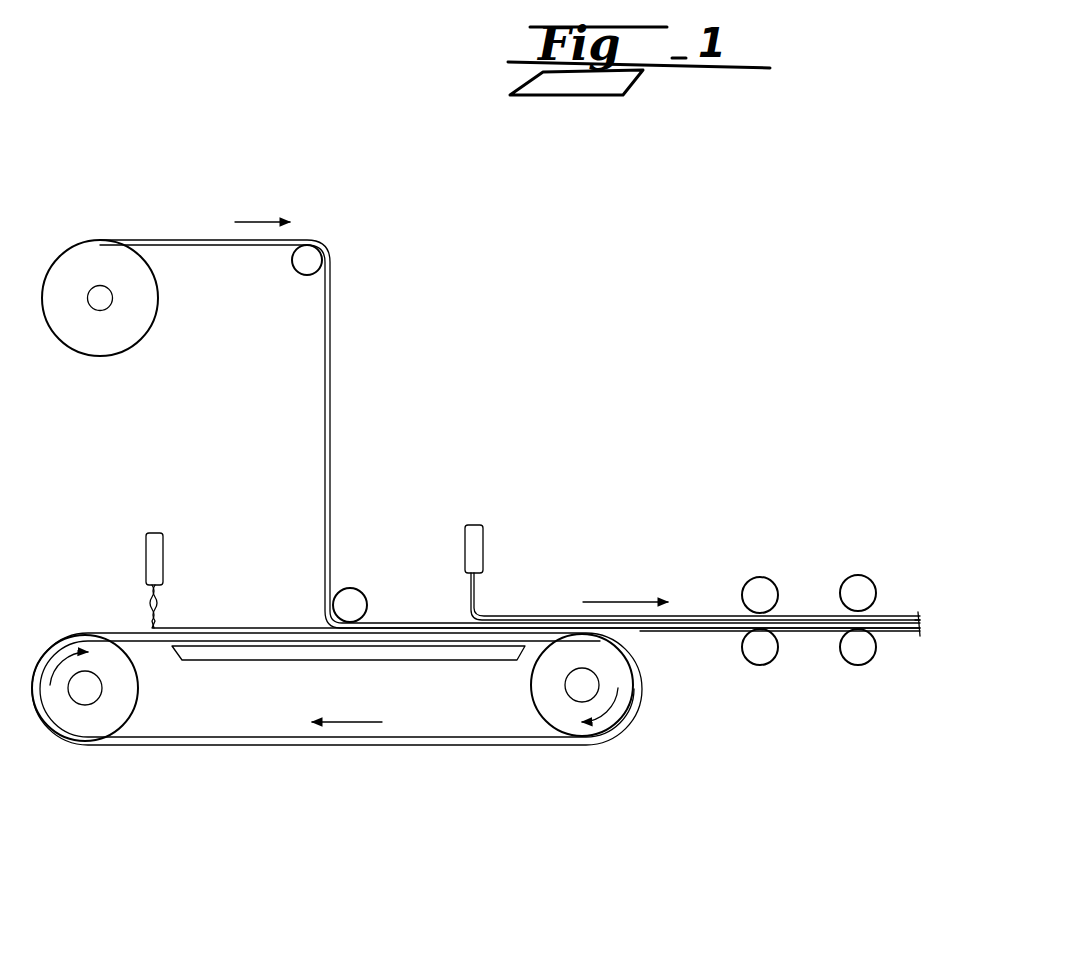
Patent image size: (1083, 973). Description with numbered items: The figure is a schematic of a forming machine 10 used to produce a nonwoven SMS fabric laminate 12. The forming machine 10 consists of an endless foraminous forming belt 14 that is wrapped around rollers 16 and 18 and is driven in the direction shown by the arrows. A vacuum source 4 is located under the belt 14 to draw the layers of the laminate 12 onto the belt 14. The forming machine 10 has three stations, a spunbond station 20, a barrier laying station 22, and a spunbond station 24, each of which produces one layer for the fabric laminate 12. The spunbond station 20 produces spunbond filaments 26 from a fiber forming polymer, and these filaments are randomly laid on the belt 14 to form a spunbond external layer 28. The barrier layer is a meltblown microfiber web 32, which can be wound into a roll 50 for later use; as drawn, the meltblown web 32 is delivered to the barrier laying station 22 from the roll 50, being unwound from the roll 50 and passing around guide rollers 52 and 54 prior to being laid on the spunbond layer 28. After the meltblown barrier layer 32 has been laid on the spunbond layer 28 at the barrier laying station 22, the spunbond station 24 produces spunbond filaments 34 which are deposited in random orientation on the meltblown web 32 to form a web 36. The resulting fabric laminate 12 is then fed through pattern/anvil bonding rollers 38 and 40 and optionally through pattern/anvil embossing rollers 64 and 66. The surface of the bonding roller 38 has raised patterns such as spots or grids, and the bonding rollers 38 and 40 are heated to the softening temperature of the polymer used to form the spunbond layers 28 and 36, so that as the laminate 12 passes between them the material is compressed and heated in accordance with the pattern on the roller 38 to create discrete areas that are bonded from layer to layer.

The forming machine 10 is at (793, 312).
The fabric laminate 12 is at (807, 612).
The forming belt 14 is at (248, 747).
The roller 16 is at (140, 700).
The roller 18 is at (533, 680).
The spunbond station 20 is at (145, 553).
The barrier laying station 22 is at (342, 317).
The spunbond station 24 is at (463, 538).
The spunbond filaments 26 is at (162, 613).
The spunbond external layer 28 is at (263, 628).
The meltblown web 32 is at (330, 418).
The spunbond filaments 34 is at (477, 587).
The web 36 is at (540, 617).
The bonding roller 38 is at (760, 577).
The bonding roller 40 is at (770, 663).
The vacuum source 4 is at (417, 660).
The roll 50 is at (73, 240).
The guide roller 52 is at (300, 267).
The guide roller 54 is at (352, 597).
The embossing roller 64 is at (870, 580).
The embossing roller 66 is at (847, 663).